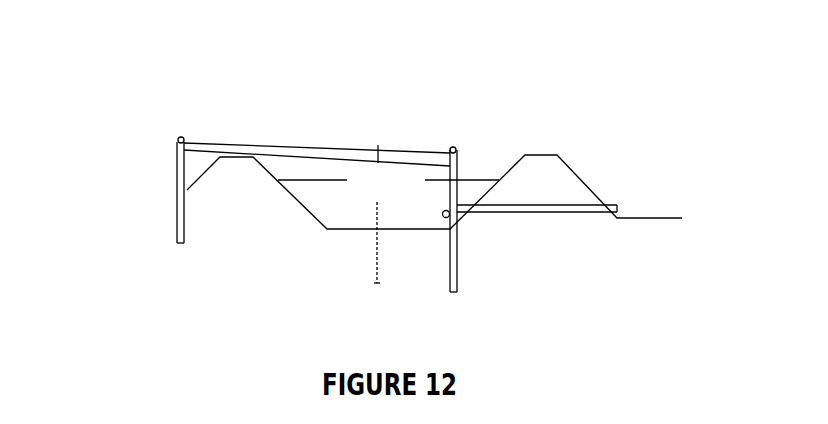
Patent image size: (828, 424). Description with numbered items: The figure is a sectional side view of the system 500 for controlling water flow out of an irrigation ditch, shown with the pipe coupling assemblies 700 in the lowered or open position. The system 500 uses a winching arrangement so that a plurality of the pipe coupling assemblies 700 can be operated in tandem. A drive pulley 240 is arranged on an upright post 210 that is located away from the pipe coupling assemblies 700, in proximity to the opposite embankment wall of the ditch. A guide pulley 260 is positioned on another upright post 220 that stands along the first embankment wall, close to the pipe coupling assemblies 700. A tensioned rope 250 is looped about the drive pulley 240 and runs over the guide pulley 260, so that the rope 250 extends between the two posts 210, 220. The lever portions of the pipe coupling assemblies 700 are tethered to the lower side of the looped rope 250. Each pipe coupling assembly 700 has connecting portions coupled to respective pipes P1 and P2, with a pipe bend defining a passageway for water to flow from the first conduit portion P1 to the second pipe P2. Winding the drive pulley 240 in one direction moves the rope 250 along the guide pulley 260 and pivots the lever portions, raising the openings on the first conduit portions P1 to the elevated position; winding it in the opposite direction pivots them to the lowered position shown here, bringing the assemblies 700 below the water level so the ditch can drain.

The system 500 is at (256, 139).
The upright post 210 is at (186, 245).
The upright post 220 is at (459, 286).
The drive pulley 240 is at (179, 138).
The rope 250 is at (302, 146).
The guide pulley 260 is at (459, 165).
The pipe coupling assembly 700 is at (447, 233).
The first conduit portion P1 is at (442, 207).
The second pipe P2 is at (500, 216).